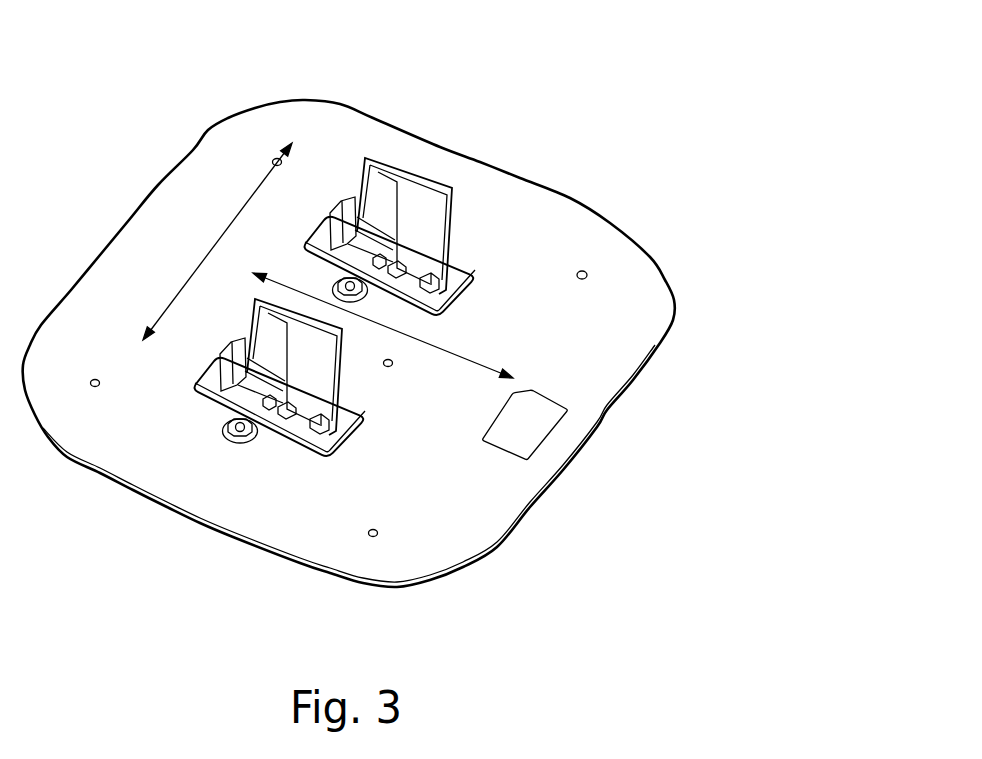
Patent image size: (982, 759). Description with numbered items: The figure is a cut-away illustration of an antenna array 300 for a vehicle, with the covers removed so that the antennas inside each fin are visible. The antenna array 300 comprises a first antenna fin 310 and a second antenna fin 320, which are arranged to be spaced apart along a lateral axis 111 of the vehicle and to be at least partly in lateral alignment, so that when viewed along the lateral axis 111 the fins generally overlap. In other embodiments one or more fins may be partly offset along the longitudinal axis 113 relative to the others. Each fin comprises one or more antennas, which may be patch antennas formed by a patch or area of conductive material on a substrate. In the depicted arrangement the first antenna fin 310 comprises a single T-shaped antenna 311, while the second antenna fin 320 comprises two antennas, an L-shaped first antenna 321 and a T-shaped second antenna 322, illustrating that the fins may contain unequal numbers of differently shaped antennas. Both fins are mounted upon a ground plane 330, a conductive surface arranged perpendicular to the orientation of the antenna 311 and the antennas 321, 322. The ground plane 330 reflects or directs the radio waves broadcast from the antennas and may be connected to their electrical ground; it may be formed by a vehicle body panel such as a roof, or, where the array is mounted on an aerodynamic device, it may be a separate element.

The antenna array 300 is at (457, 323).
The ground plane 330 is at (167, 477).
The first antenna fin 310 is at (277, 445).
The antenna 311 is at (303, 387).
The second antenna fin 320 is at (398, 150).
The first antenna 321 is at (345, 223).
The second antenna 322 is at (423, 190).
The lateral axis 111 is at (217, 241).
The longitudinal axis 113 is at (383, 325).